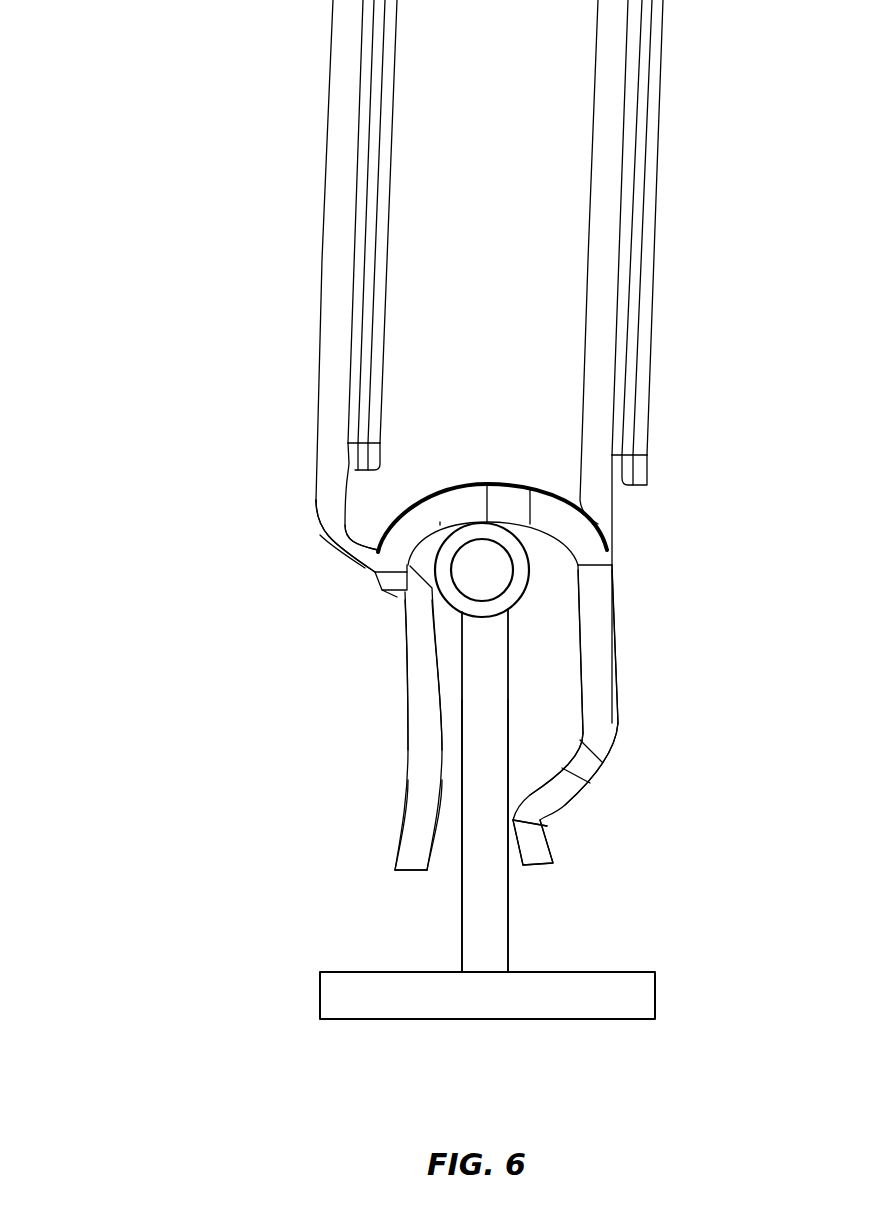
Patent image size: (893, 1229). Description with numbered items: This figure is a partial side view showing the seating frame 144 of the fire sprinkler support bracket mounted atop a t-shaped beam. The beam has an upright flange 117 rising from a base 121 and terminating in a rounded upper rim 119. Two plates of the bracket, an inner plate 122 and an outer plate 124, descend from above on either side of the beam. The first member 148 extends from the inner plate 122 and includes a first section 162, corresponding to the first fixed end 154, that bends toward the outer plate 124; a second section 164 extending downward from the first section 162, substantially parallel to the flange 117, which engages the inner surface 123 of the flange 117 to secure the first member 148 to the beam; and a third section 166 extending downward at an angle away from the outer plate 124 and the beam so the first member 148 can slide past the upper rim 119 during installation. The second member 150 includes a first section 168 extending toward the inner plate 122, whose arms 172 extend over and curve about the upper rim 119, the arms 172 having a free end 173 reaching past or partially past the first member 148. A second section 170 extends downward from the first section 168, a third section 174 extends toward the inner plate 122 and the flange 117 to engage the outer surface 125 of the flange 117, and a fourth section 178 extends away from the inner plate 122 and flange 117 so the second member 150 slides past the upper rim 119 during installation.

The flange 117 is at (485, 942).
The upper rim 119 is at (537, 585).
The base 121 is at (347, 990).
The inner plate 122 is at (327, 160).
The inner surface 123 is at (462, 921).
The outer plate 124 is at (612, 143).
The outer surface 125 is at (508, 900).
The seating frame 144 is at (152, 632).
The first member 148 is at (347, 752).
The second member 150 is at (666, 680).
The first fixed end 154 is at (280, 525).
The first section 162 is at (337, 545).
The second section 164 is at (407, 683).
The third section 166 is at (410, 855).
The first section 168 is at (489, 458).
The second section 170 is at (598, 602).
The arms 172 is at (408, 523).
The free end 173 is at (380, 590).
The third section 174 is at (562, 783).
The fourth section 178 is at (540, 850).